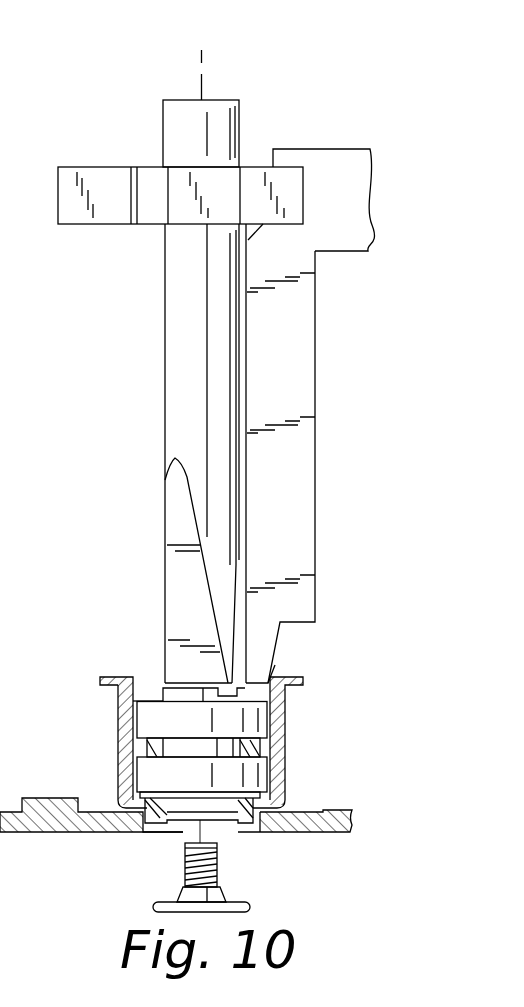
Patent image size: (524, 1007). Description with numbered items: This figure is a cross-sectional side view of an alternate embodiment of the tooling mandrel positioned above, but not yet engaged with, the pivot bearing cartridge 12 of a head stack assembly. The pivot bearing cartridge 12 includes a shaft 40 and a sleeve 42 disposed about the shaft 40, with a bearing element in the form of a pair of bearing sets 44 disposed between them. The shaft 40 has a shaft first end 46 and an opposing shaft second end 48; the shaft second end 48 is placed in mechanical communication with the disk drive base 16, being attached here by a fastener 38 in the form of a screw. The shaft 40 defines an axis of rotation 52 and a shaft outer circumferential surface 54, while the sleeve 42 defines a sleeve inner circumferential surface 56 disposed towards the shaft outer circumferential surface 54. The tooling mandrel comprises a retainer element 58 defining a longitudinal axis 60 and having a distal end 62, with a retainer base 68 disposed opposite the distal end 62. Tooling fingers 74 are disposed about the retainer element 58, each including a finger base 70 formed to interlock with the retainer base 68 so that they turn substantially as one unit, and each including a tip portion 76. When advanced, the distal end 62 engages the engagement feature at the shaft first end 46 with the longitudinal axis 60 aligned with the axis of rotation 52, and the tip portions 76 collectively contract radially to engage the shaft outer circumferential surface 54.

The pivot bearing cartridge 12 is at (322, 682).
The disk drive base 16 is at (47, 798).
The fastener 38 is at (217, 872).
The shaft 40 is at (203, 693).
The sleeve 42 is at (287, 738).
The bearing sets 44 is at (148, 718).
The shaft first end 46 is at (166, 688).
The shaft second end 48 is at (222, 817).
The axis of rotation 52 is at (198, 833).
The shaft outer circumferential surface 54 is at (160, 697).
The sleeve inner circumferential surface 56 is at (135, 680).
The retainer element 58 is at (165, 352).
The longitudinal axis 60 is at (203, 68).
The distal end 62 is at (197, 635).
The retainer base 68 is at (292, 195).
The finger base 70 is at (343, 149).
The tooling fingers 74 is at (315, 350).
The tip portion 76 is at (260, 652).